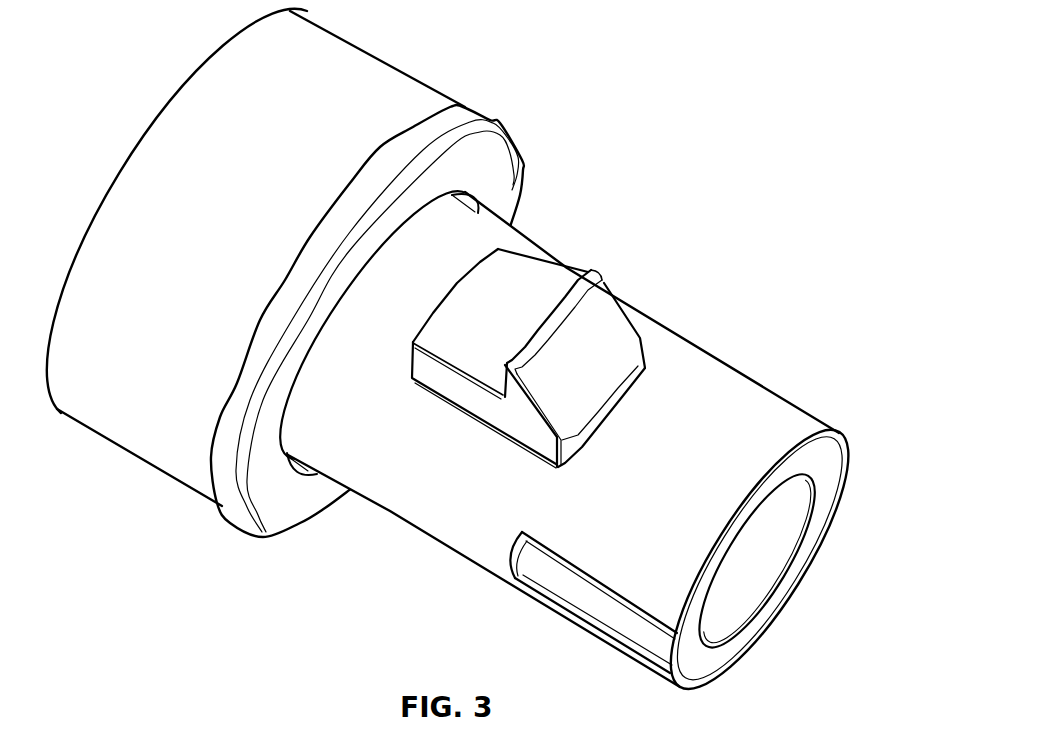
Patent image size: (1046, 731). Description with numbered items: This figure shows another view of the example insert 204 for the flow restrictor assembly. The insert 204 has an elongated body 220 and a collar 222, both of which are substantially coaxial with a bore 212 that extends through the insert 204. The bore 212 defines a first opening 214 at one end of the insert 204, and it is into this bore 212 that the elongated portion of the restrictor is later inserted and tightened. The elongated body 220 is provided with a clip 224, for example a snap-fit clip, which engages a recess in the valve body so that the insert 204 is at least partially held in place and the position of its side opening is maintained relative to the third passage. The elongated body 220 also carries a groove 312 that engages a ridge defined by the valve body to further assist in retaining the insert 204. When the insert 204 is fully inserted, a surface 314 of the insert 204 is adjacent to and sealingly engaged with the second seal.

The insert 204 is at (757, 50).
The collar 222 is at (408, 78).
The elongated body 220 is at (677, 334).
The clip 224 is at (605, 302).
The surface 314 is at (272, 517).
The groove 312 is at (608, 610).
The first opening 214 is at (740, 597).
The bore 212 is at (718, 618).